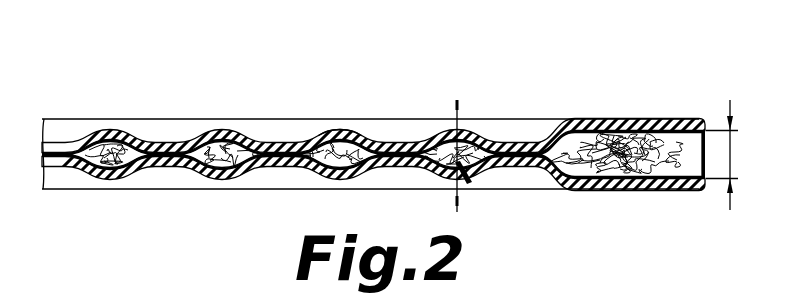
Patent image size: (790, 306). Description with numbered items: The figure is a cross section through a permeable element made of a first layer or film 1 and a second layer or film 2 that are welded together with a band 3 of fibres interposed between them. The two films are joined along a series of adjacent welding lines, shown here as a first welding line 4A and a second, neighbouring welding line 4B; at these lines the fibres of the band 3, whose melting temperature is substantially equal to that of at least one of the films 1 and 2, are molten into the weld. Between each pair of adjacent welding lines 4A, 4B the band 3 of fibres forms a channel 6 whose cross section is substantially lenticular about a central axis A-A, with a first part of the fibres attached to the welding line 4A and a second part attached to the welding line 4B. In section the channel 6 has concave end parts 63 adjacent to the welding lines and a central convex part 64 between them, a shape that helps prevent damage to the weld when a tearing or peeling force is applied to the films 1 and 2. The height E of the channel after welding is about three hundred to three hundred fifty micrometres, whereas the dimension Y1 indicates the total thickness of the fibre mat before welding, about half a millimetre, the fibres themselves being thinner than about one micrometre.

The first layer or film 1 is at (405, 140).
The second layer or film 2 is at (405, 119).
The band of fibres 3 is at (665, 126).
The first welding line 4A is at (512, 168).
The second welding line 4B is at (385, 164).
The channel 6 is at (468, 186).
The concave end parts 63 is at (377, 130).
The central convex part 64 is at (341, 129).
The thickness or height of the channel E is at (459, 103).
The central axis A-A is at (111, 156).
The total thickness of the mat before welding Y1 is at (736, 152).